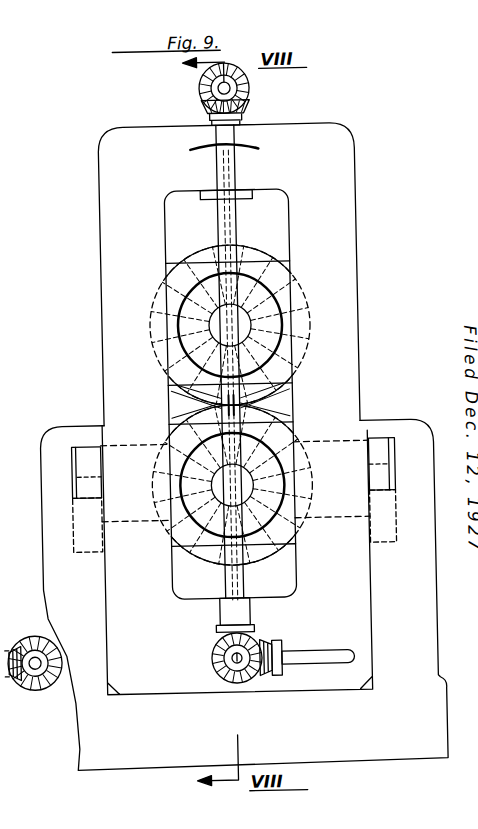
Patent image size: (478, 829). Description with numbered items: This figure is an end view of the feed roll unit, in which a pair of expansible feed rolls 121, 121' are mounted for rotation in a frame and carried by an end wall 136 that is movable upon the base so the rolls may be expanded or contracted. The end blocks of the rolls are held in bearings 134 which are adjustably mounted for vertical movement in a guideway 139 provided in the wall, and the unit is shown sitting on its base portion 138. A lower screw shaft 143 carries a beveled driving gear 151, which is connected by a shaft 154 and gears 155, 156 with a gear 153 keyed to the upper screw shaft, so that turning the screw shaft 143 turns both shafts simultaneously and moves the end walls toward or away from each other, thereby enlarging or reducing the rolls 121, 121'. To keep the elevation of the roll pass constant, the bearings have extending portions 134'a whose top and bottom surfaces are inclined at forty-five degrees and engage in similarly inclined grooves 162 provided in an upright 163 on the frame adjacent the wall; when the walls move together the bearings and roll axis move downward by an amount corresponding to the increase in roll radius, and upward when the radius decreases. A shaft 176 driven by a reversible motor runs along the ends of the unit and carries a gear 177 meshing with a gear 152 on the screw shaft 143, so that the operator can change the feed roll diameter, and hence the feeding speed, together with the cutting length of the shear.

The expansible feed roll 121 is at (230, 313).
The expansible feed roll 121' is at (214, 480).
The bearing 134 is at (285, 391).
The extending portion of bearing 134'a is at (241, 463).
The end wall 136 is at (360, 262).
The base frame 138 is at (434, 611).
The guideway 139 is at (287, 213).
The screw shaft 143 is at (226, 661).
The beveled driving gear 151 is at (222, 658).
The gear 152 is at (210, 677).
The gear 153 is at (206, 88).
The shaft 154 is at (237, 176).
The gear 155 is at (246, 113).
The gear 156 is at (209, 641).
The groove 162 is at (397, 450).
The upright 163 is at (431, 439).
The shaft 176 is at (326, 633).
The gear 177 is at (256, 680).